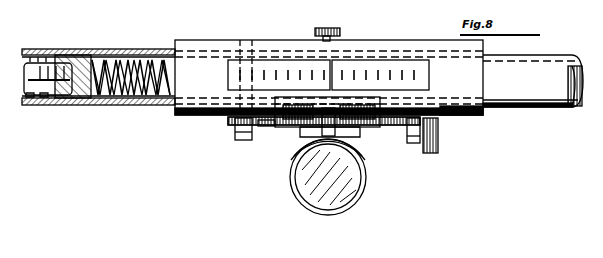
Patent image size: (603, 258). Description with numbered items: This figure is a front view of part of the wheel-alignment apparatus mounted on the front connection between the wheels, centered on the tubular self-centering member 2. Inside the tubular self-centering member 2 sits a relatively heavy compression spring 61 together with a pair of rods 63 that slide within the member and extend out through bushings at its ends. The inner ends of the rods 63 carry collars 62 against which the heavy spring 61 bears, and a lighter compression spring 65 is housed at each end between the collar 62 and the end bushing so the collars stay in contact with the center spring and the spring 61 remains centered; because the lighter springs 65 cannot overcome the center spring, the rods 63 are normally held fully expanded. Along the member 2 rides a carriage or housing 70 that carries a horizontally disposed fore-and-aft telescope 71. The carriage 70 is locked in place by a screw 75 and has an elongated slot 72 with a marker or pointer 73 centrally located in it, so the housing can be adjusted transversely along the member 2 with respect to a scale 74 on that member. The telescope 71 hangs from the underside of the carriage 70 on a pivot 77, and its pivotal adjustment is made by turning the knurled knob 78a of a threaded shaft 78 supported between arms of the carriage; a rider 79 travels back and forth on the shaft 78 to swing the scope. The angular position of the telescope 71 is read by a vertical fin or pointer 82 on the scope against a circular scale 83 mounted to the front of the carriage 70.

The tubular self-centering member 2 is at (527, 96).
The compression spring 61 is at (133, 60).
The collar 62 is at (82, 62).
The rod 63 is at (33, 98).
The lighter compression spring 65 is at (44, 62).
The carriage 70 is at (467, 110).
The telescope 71 is at (366, 187).
The elongated slot 72 is at (395, 60).
The pointer 73 is at (340, 64).
The scale 74 is at (283, 66).
The screw 75 is at (334, 30).
The pivot 77 is at (366, 152).
The threaded shaft 78 is at (252, 140).
The knurled knob 78a is at (430, 152).
The rider 79 is at (310, 134).
The pointer 82 is at (352, 130).
The circular scale 83 is at (290, 126).